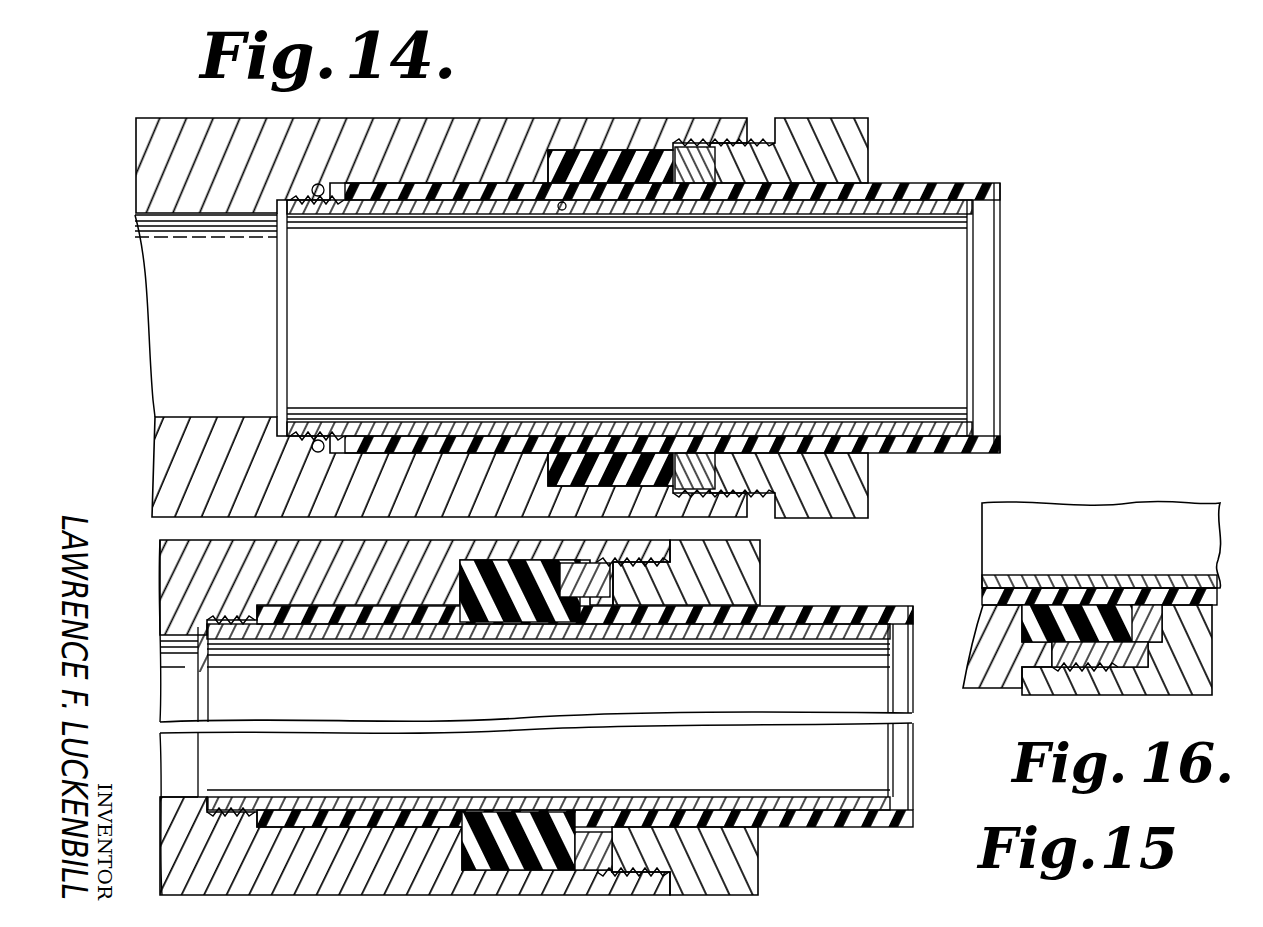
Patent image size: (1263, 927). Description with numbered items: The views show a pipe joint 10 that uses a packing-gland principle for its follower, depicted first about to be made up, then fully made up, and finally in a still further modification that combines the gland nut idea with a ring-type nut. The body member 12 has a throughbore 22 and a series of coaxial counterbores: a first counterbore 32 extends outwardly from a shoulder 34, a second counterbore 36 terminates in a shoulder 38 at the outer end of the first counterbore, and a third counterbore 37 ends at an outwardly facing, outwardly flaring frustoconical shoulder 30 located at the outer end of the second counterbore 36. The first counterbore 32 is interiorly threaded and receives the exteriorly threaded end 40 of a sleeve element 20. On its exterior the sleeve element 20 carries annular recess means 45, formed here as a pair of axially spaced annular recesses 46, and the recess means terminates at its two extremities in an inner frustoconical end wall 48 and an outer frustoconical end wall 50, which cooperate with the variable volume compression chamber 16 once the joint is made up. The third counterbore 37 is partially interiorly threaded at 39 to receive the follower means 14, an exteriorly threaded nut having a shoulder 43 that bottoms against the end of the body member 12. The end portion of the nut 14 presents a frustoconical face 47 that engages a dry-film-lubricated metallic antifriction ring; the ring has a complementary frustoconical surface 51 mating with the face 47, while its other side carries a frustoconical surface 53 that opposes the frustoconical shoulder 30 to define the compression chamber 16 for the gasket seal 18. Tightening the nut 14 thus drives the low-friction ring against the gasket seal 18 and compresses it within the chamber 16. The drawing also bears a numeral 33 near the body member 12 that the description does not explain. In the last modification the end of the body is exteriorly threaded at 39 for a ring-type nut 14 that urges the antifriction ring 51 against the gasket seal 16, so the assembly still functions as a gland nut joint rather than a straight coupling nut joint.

In FIG. 14, the joint 10 is at (590, 85).
In FIG. 15, the joint 10 is at (738, 534).
In FIG. 16, the joint 10 is at (1197, 702).
In FIG. 14, the body member 12 is at (387, 119).
In FIG. 14, the follower means 14 is at (872, 120).
In FIG. 16, the follower means 14 is at (1212, 658).
In FIG. 14, the compression chamber 16 is at (618, 150).
In FIG. 15, the compression chamber 16 is at (505, 830).
In FIG. 16, the compression chamber 16 is at (1080, 603).
In FIG. 14, the gasket seal 18 is at (705, 141).
In FIG. 15, the gasket seal 18 is at (567, 832).
In FIG. 15, the sleeve element 20 is at (773, 808).
In FIG. 14, the throughbore 22 is at (197, 245).
In FIG. 15, the throughbore 22 is at (179, 719).
In FIG. 15, the frustoconical shoulder 30 is at (486, 789).
In FIG. 14, the first counterbore 32 is at (297, 208).
In FIG. 15, the shoulder 33 is at (243, 808).
In FIG. 15, the shoulder 34 is at (208, 800).
In FIG. 14, the second counterbore 36 is at (545, 207).
In FIG. 15, the second counterbore 36 is at (373, 808).
In FIG. 15, the third counterbore 37 is at (610, 833).
In FIG. 16, the third counterbore 37 is at (1055, 648).
In FIG. 14, the shoulder 38 is at (335, 200).
In FIG. 15, the shoulder 38 is at (255, 820).
In FIG. 14, the threads 39 is at (770, 147).
In FIG. 15, the threads 39 is at (664, 820).
In FIG. 16, the threads 39 is at (1088, 668).
In FIG. 14, the exteriorly threaded end 40 is at (330, 203).
In FIG. 15, the exteriorly threaded end 40 is at (235, 815).
In FIG. 14, the shoulder 43 is at (775, 140).
In FIG. 15, the shoulder 43 is at (722, 803).
In FIG. 14, the annular recess means 45 is at (648, 202).
In FIG. 15, the annular recess means 45 is at (517, 795).
In FIG. 14, the annular recesses 46 is at (565, 209).
In FIG. 15, the annular recesses 46 is at (580, 822).
In FIG. 14, the frustoconical face 47 is at (707, 207).
In FIG. 14, the inner frustoconical end wall 48 is at (548, 208).
In FIG. 14, the outer frustoconical end wall 50 is at (647, 212).
In FIG. 14, the frustoconical surface 51 is at (813, 200).
In FIG. 15, the frustoconical surface 51 is at (648, 828).
In FIG. 16, the frustoconical surface 51 is at (1160, 625).
In FIG. 15, the frustoconical surface 53 is at (612, 830).